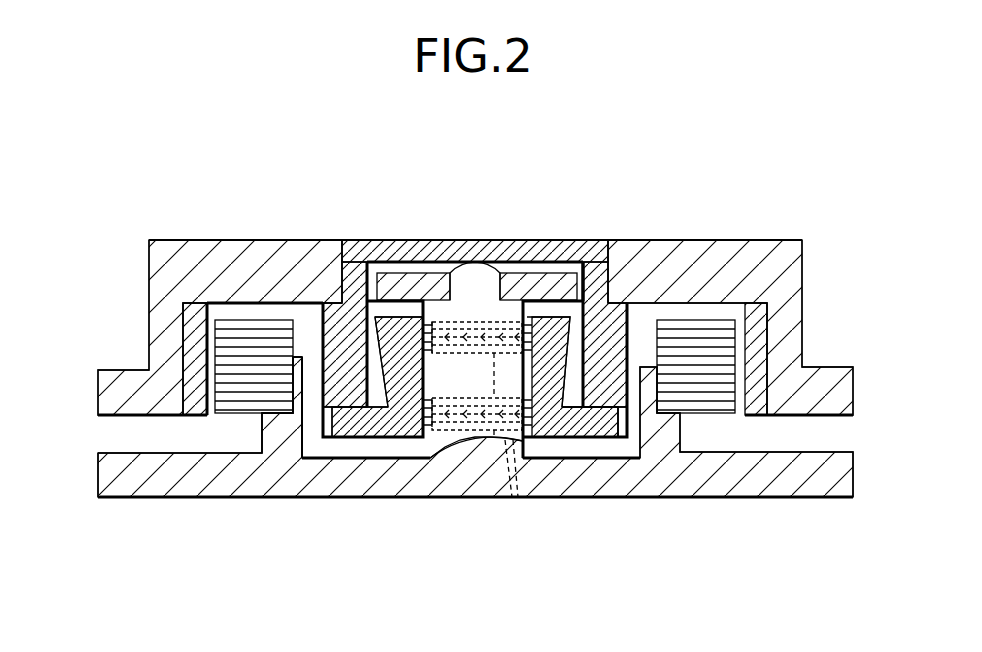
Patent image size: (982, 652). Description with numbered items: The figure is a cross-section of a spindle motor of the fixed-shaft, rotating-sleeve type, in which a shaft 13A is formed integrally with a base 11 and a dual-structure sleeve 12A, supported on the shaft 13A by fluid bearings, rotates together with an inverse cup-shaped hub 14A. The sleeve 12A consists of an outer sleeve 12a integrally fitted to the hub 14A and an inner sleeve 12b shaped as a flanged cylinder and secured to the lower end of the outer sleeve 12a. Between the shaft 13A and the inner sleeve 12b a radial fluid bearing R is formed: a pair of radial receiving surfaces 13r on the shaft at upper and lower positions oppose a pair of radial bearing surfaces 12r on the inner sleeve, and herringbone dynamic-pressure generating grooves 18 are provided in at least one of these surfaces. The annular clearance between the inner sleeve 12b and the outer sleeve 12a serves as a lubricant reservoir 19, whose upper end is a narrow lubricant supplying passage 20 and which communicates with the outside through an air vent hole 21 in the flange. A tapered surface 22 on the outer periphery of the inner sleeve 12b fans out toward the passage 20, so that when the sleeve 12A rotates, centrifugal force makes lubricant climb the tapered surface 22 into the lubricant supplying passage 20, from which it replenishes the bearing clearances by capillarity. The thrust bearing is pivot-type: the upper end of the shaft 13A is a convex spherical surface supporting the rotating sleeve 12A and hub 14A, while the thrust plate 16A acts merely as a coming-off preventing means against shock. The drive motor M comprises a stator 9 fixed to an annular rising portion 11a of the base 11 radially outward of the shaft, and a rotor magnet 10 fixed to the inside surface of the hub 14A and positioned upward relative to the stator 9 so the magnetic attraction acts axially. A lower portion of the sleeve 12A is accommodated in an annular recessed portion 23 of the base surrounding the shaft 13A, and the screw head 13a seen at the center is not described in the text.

The hub 14A is at (782, 252).
The drive motor M is at (102, 307).
The rotor magnet 10 is at (192, 323).
The stator 9 is at (230, 355).
The base 11 is at (165, 485).
The annular rising portion 11a is at (283, 440).
The annular recessed portion 23 is at (339, 448).
The shaft 13A is at (523, 353).
The thrust plate 16A is at (397, 260).
The lubricant reservoir 19 is at (600, 405).
The lubricant supplying passage 20 is at (568, 380).
The air vent hole 21 is at (578, 440).
The tapered surface 22 is at (597, 433).
The sleeve 12A is at (620, 192).
The outer sleeve 12a is at (540, 262).
The inner sleeve 12b is at (584, 262).
The screw head 13a is at (475, 263).
The radial fluid bearing R is at (528, 541).
The radial receiving surfaces 13r is at (412, 352).
The radial bearing surfaces 12r is at (428, 332).
The dynamic-pressure generating grooves 18 is at (510, 497).